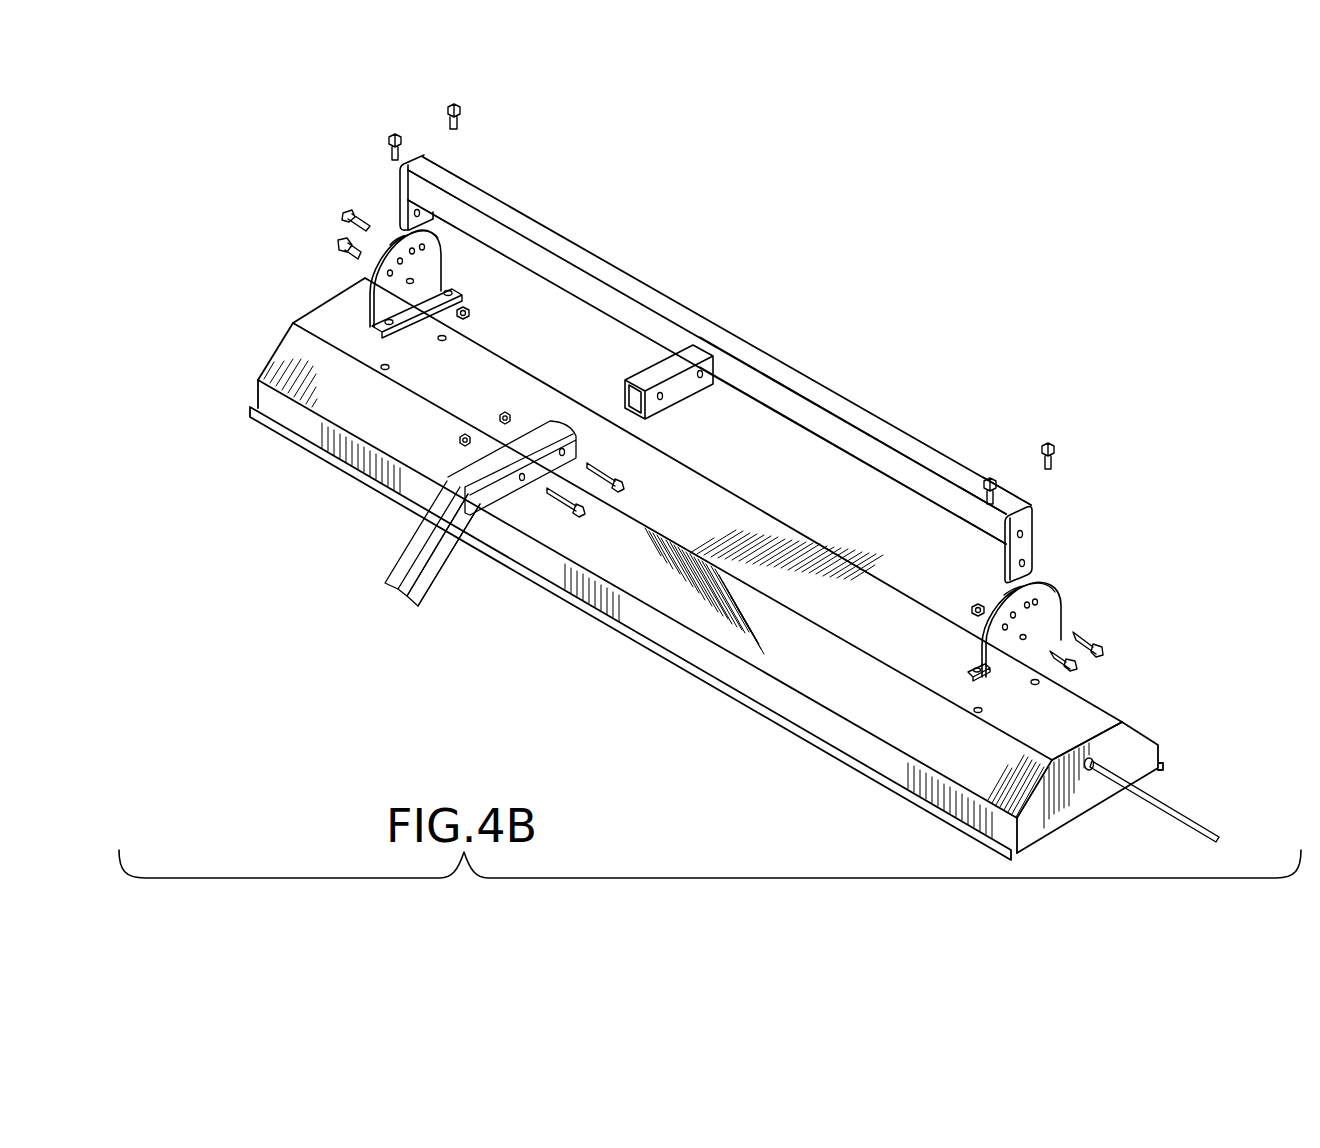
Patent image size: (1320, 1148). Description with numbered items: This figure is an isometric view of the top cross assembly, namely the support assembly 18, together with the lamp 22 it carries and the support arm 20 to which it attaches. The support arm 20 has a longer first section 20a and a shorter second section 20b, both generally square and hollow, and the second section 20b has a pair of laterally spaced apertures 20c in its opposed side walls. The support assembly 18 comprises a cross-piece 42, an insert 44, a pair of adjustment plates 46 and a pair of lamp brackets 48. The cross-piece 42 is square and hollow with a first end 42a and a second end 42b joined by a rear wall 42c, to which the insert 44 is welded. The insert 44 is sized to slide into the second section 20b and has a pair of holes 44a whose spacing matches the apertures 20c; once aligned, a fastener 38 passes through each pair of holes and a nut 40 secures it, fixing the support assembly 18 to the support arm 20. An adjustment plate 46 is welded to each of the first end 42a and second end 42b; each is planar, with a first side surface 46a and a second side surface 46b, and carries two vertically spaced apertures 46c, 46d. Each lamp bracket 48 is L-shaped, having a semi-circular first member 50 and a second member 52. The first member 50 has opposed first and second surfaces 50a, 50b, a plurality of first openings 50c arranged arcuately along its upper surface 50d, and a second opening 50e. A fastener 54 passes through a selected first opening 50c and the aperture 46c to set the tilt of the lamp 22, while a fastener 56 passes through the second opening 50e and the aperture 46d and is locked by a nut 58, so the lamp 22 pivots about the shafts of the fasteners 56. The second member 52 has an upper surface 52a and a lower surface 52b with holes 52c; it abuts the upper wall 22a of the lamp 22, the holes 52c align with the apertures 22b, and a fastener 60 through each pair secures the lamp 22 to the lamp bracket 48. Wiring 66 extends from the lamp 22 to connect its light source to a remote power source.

The support assembly 18 is at (928, 404).
The support arm 20 is at (468, 484).
The first section 20a is at (420, 538).
The second section 20b is at (502, 490).
The apertures 20c is at (562, 450).
The lamp 22 is at (709, 569).
The upper wall 22a is at (708, 520).
The apertures 22b is at (386, 369).
The fastener 38 is at (611, 474).
The nut 40 is at (502, 414).
The cross-piece 42 is at (772, 322).
The first end 42a is at (427, 168).
The second end 42b is at (1029, 515).
The rear wall 42c is at (793, 412).
The insert 44 is at (695, 370).
The holes 44a is at (700, 377).
The adjustment plate 46 is at (726, 353).
The first side surface 46a is at (408, 212).
The second side surface 46b is at (398, 207).
The aperture 46c is at (1023, 535).
The aperture 46d is at (420, 215).
The lamp bracket 48 is at (749, 452).
The first member 50 is at (749, 452).
The first surface 50a is at (449, 257).
The second surface 50b is at (1060, 598).
The first openings 50c is at (418, 263).
The upper surface 50d is at (444, 245).
The second opening 50e is at (413, 281).
The second member 52 is at (590, 509).
The upper surface 52a is at (399, 303).
The lower surface 52b is at (372, 328).
The holes 52c is at (452, 292).
The fastener 54 is at (341, 216).
The fastener 56 is at (339, 248).
The nut 58 is at (471, 316).
The fastener 60 is at (447, 110).
The wiring 66 is at (1199, 822).